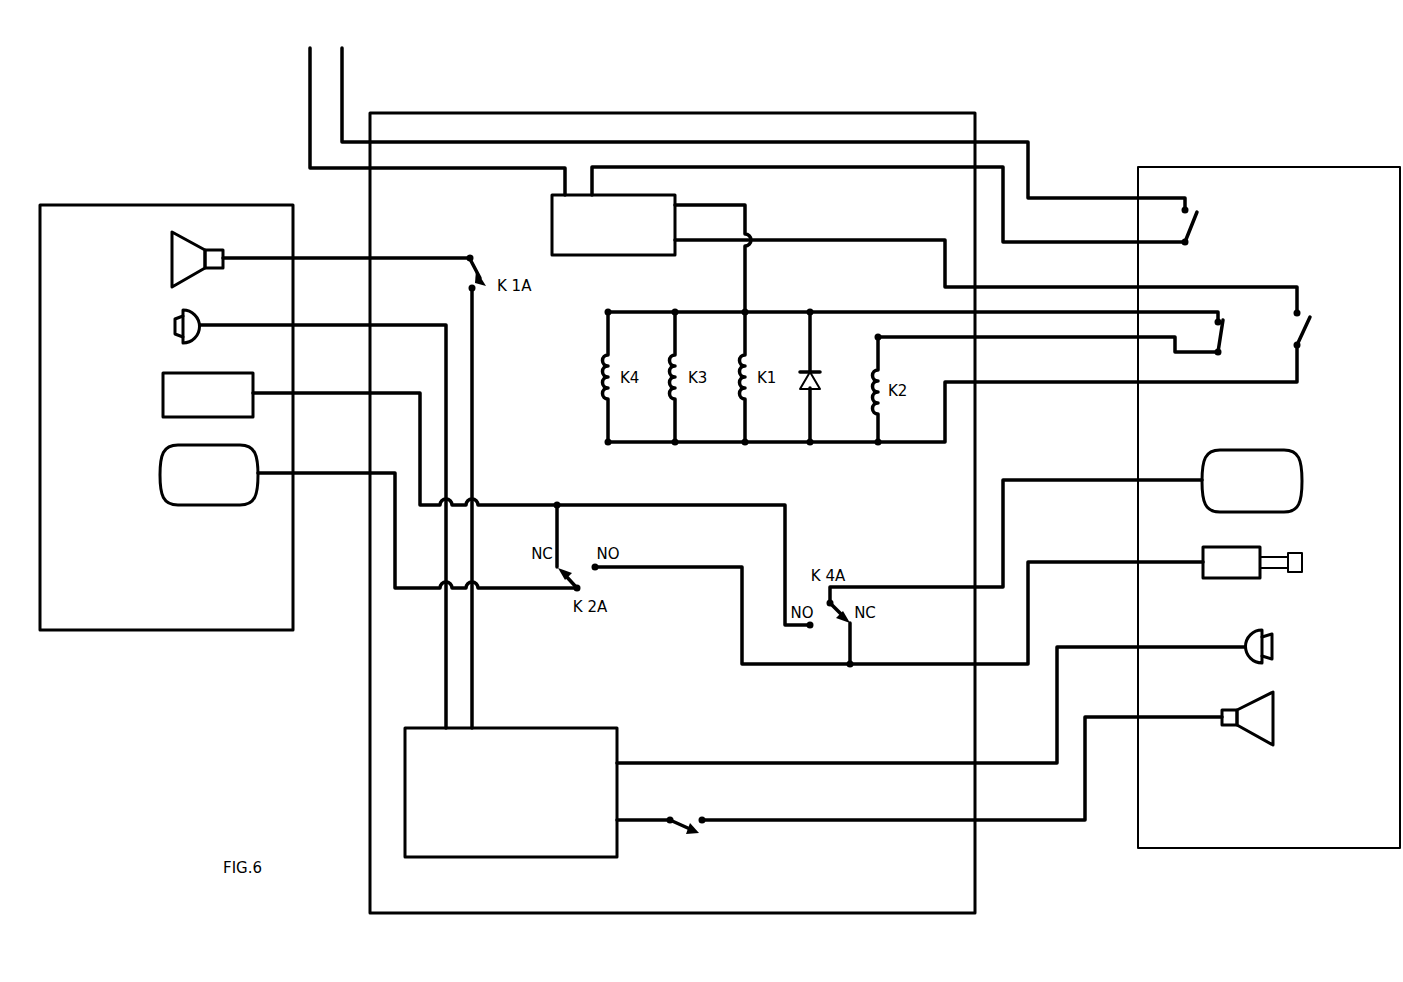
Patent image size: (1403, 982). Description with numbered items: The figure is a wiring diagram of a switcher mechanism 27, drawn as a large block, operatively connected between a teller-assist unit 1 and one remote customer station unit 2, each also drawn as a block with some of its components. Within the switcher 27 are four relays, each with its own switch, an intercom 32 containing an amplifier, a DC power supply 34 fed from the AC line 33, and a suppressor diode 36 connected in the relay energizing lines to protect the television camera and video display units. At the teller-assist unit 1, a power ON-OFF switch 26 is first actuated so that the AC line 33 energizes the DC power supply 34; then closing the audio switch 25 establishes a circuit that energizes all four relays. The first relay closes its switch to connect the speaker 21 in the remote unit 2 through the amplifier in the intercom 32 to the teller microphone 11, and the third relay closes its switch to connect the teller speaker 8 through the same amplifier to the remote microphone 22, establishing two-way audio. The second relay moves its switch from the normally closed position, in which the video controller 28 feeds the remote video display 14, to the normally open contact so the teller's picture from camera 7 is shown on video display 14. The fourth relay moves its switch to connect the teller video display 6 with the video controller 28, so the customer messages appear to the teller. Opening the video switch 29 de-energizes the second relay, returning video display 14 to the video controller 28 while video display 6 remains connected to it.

The teller-assist unit 1 is at (1322, 851).
The remote customer station unit 2 is at (104, 631).
The video display 6 is at (1294, 457).
The camera 7 is at (1227, 580).
The speaker 8 is at (1272, 737).
The microphone 11 is at (1267, 656).
The video display 14 is at (165, 502).
The speaker 21 is at (187, 252).
The microphone 22 is at (182, 314).
The audio switch 25 is at (1317, 330).
The power ON-OFF switch 26 is at (1190, 235).
The switcher mechanism 27 is at (692, 916).
The video controller 28 is at (180, 373).
The video switch 29 is at (1224, 333).
The intercom 32 is at (520, 843).
The AC line 33 is at (342, 62).
The DC power supply 34 is at (583, 243).
The suppressor diode 36 is at (818, 373).